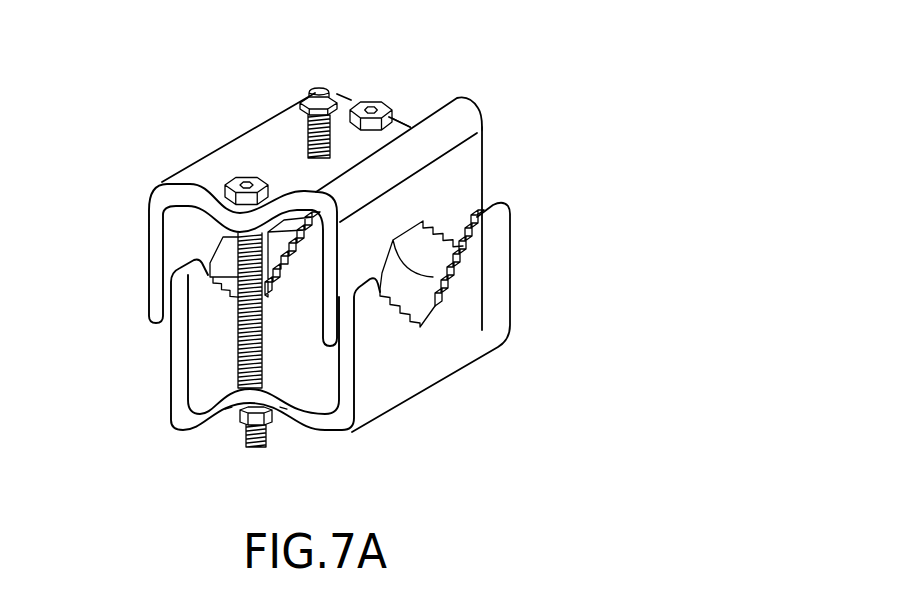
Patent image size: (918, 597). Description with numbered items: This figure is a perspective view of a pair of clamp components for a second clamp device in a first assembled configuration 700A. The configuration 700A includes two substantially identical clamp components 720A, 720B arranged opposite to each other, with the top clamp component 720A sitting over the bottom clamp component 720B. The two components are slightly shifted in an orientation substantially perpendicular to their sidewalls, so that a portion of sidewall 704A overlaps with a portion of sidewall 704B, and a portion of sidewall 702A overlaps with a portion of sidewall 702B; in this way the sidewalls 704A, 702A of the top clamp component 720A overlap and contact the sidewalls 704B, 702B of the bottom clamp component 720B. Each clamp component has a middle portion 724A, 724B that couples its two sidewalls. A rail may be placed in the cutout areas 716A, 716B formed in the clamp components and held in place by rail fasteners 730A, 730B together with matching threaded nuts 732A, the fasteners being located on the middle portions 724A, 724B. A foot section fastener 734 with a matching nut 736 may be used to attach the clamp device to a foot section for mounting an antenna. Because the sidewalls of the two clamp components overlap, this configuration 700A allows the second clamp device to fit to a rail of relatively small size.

The configuration 700A is at (497, 80).
The sidewall 702A is at (470, 178).
The sidewall 702B is at (373, 420).
The sidewall 704A is at (149, 266).
The sidewall 704B is at (170, 409).
The cutout area 716A is at (420, 253).
The cutout area 716B is at (447, 310).
The clamp component 720A is at (215, 270).
The clamp component 720B is at (431, 338).
The middle portion 724A is at (410, 125).
The middle portion 724B is at (280, 417).
The rail fastener 730A is at (225, 188).
The rail fastener 730B is at (371, 100).
The threaded nut 732A is at (244, 425).
The foot section fastener 734 is at (307, 135).
The nut 736 is at (306, 96).